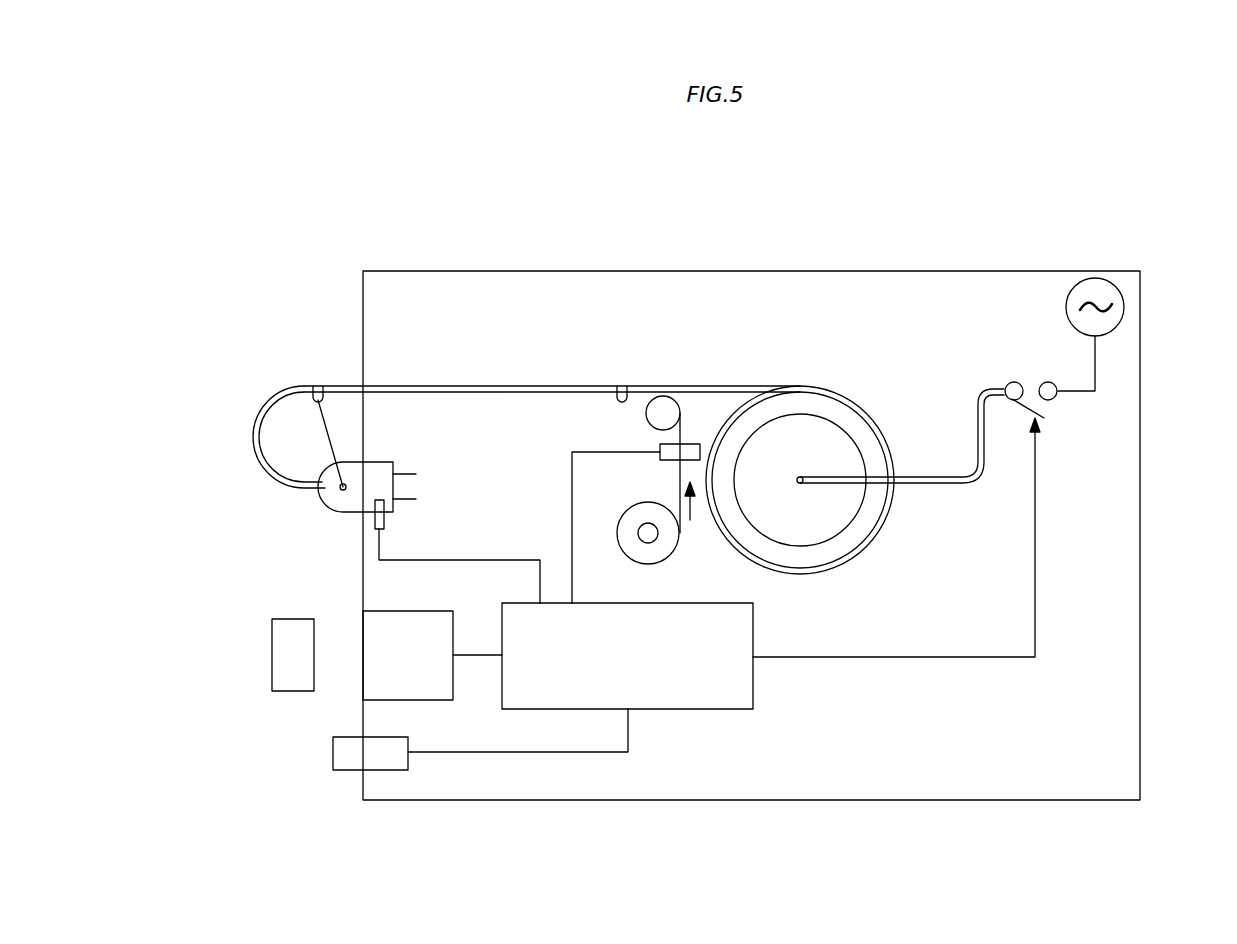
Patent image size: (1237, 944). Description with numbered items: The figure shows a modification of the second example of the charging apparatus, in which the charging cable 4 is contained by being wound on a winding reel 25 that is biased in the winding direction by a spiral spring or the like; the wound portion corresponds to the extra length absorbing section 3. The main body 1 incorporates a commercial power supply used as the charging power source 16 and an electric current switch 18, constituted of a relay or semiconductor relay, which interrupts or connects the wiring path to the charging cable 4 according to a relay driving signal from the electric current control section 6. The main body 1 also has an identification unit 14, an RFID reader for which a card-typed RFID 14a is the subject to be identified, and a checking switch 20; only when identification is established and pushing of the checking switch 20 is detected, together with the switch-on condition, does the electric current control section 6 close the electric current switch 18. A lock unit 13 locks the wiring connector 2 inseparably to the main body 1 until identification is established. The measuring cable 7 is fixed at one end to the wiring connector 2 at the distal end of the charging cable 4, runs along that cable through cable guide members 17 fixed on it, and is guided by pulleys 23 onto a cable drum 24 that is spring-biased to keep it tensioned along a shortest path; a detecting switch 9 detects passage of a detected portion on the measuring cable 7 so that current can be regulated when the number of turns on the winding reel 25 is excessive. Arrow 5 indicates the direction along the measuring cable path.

The main body 1 is at (1120, 580).
The wiring connector 2 is at (345, 505).
The extra length absorbing section 3 is at (850, 381).
The charging cable 4 is at (253, 440).
The feed direction 5 is at (694, 502).
The electric current control section 6 is at (733, 688).
The measuring cable 7 is at (322, 428).
The detecting switch 9 is at (695, 448).
The lock unit 13 is at (387, 525).
The identification unit 14 is at (375, 668).
The card-typed RFID 14a is at (287, 641).
The charging power source 16 is at (1112, 300).
The cable guide members 17 is at (322, 387).
The electric current switch 18 is at (1040, 405).
The checking switch 20 is at (348, 760).
The pulleys 23 is at (665, 396).
The cable drum 24 is at (652, 560).
The winding reel 25 is at (847, 565).